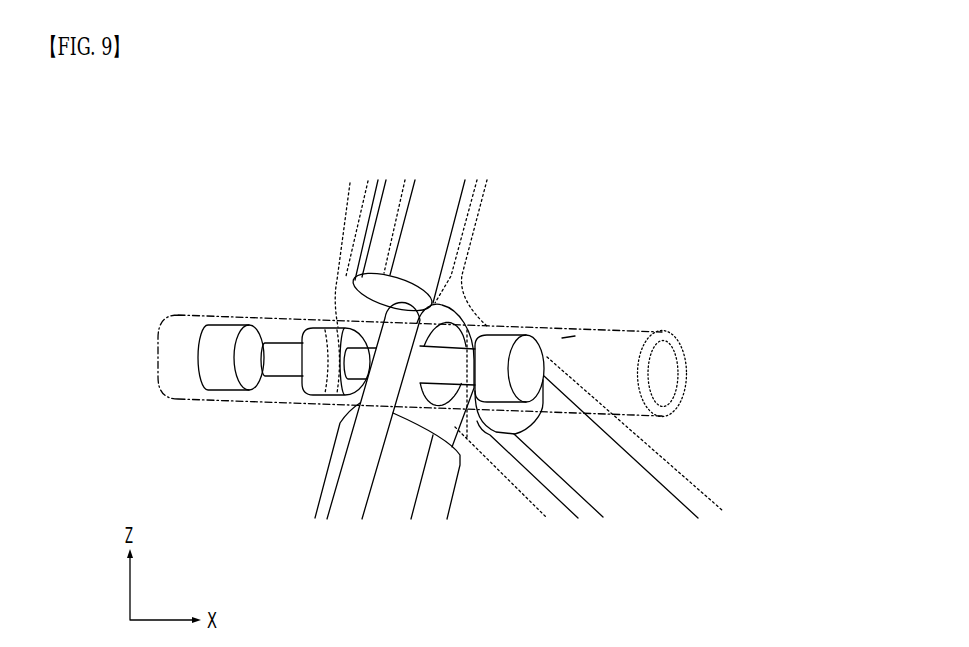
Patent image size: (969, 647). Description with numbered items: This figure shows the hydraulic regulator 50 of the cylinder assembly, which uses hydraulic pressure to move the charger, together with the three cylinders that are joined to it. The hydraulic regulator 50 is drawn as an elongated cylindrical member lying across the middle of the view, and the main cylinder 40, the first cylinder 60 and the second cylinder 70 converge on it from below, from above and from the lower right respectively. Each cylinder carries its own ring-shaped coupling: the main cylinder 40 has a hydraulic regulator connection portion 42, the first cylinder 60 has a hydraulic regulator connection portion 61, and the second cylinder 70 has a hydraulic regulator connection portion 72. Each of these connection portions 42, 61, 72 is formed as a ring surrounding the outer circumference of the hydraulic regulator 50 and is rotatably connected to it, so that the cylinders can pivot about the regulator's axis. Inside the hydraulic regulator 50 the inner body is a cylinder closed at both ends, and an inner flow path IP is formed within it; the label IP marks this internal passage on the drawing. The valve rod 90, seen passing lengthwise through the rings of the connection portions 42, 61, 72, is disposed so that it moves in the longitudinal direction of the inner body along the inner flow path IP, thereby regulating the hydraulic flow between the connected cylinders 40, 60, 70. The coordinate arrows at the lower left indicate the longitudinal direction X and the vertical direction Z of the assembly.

The main cylinder 40 is at (345, 498).
The hydraulic regulator connection portion 42 is at (420, 303).
The hydraulic regulator 50 is at (619, 325).
The first cylinder 60 is at (360, 184).
The hydraulic regulator connection portion 61 is at (335, 412).
The second cylinder 70 is at (540, 509).
The hydraulic regulator connection portion 72 is at (479, 320).
The valve rod 90 is at (229, 388).
The inner flow path IP is at (568, 332).